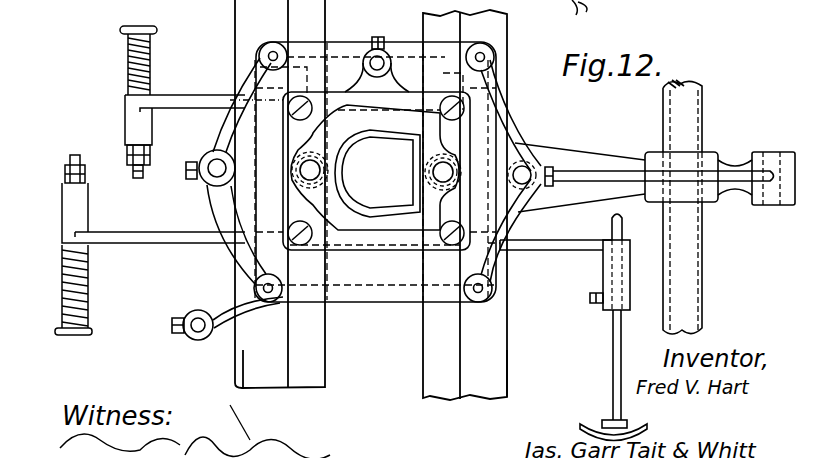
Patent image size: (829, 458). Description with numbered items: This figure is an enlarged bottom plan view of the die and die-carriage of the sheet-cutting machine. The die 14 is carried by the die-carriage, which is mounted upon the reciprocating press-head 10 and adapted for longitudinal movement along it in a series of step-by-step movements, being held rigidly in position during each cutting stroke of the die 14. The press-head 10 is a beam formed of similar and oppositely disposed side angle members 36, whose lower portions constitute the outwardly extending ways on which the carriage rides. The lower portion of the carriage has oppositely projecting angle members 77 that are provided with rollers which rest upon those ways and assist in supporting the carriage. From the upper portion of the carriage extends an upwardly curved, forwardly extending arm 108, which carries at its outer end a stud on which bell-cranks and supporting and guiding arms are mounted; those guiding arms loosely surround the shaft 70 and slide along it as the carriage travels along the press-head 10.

The press-head 10 is at (423, 348).
The die 14 is at (347, 145).
The side angle members 36 is at (520, 357).
The shaft 70 is at (697, 113).
The angle members 77 is at (233, 185).
The arm 108 is at (588, 158).